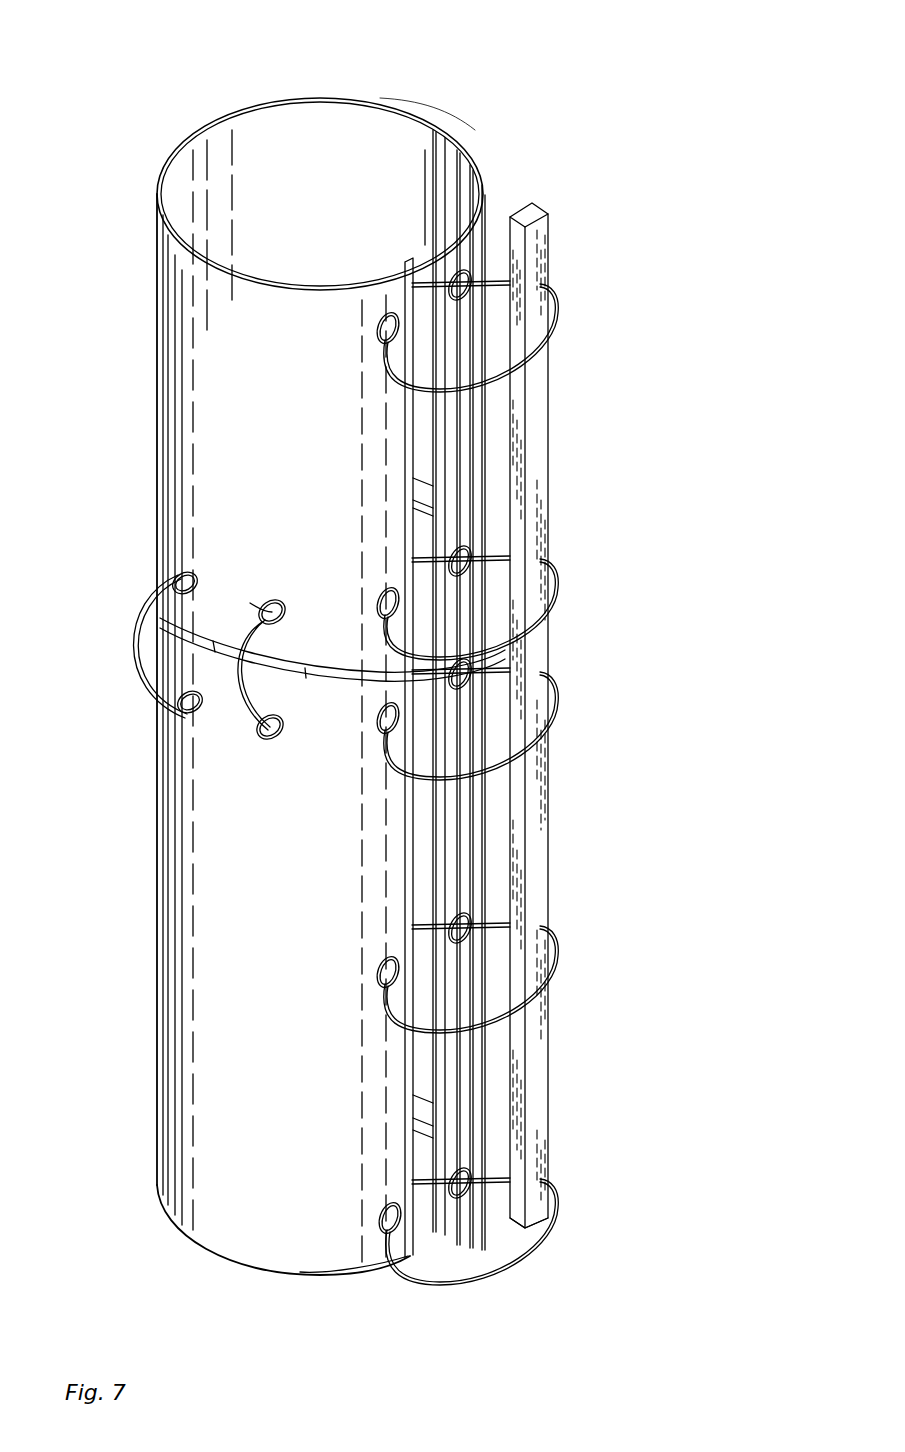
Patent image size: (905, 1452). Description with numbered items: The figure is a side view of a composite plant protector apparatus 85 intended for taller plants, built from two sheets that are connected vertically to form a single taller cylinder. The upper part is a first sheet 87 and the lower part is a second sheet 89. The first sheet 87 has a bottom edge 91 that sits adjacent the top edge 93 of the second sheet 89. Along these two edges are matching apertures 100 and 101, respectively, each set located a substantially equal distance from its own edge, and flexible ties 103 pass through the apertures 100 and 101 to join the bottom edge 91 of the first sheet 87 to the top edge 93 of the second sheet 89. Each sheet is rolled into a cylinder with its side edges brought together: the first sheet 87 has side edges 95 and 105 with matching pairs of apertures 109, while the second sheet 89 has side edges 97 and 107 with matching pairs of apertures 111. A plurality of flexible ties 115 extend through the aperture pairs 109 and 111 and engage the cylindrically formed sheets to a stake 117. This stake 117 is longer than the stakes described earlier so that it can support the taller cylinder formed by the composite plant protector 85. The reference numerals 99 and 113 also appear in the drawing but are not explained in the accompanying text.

The composite plant protector apparatus 85 is at (556, 112).
The first sheet 87 is at (428, 115).
The second sheet 89 is at (158, 932).
The bottom edge 91 is at (260, 736).
The top edge 93 is at (160, 648).
The side edge 95 is at (415, 478).
The side edge 97 is at (423, 718).
The upper eyelet 99 is at (188, 632).
The apertures 100 is at (200, 577).
The apertures 101 is at (195, 705).
The flexible ties 103 is at (250, 603).
The side edge 105 is at (425, 240).
The side edge 107 is at (432, 1235).
The apertures 109 is at (412, 250).
The apertures 111 is at (428, 1140).
The lower end of sleeve 113 is at (197, 1252).
The flexible ties 115 is at (557, 303).
The stake 117 is at (548, 1137).